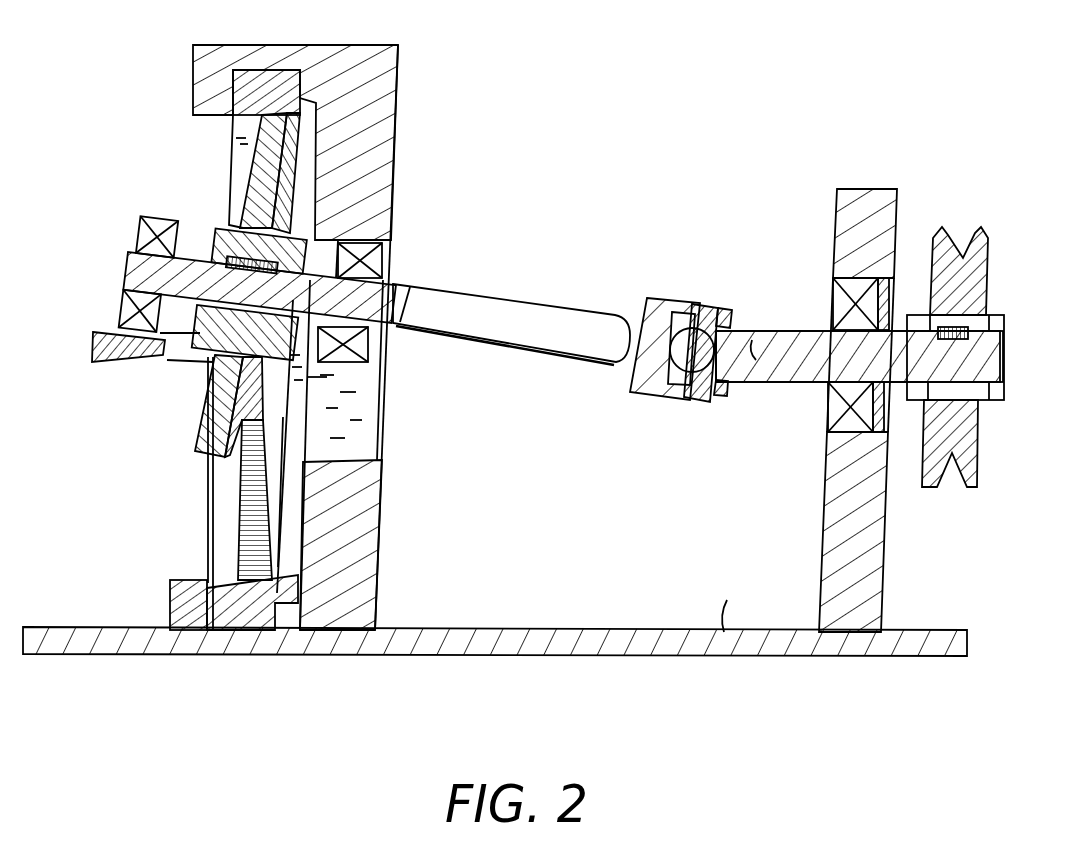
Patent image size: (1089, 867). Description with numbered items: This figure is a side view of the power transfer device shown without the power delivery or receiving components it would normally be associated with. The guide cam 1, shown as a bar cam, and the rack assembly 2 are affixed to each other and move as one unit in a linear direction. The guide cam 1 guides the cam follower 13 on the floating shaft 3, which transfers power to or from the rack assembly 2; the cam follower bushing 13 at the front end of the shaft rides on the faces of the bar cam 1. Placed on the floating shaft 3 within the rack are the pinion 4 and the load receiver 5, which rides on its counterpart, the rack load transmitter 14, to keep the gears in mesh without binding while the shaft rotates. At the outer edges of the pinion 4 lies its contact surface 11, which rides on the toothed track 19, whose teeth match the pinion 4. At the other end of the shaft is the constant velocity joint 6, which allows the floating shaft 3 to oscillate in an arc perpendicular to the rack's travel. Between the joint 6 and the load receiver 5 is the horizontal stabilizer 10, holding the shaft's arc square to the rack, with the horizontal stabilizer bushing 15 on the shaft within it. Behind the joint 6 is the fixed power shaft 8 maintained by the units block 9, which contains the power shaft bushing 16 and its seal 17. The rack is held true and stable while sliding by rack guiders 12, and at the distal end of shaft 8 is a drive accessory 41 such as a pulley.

The guide cam 1 is at (88, 353).
The rack assembly 2 is at (227, 593).
The floating shaft 3 is at (520, 330).
The pinion wheel or gear 4 is at (198, 423).
The load receiver 5 is at (385, 187).
The constant velocity joint 6 is at (697, 393).
The shaft 8 is at (805, 363).
The units block 9 is at (836, 577).
The horizontal stabilizer 10 is at (385, 86).
The contact surface 11 is at (198, 455).
The rack guiders 12 is at (172, 607).
The cam follower 13 is at (168, 216).
The rack load transmitter 14 is at (273, 443).
The horizontal stabilizer bushing 15 is at (373, 264).
The power shaft bushing 16 is at (847, 305).
The seal 17 is at (900, 297).
The track 19 is at (237, 502).
The drive accessory 41 is at (977, 267).